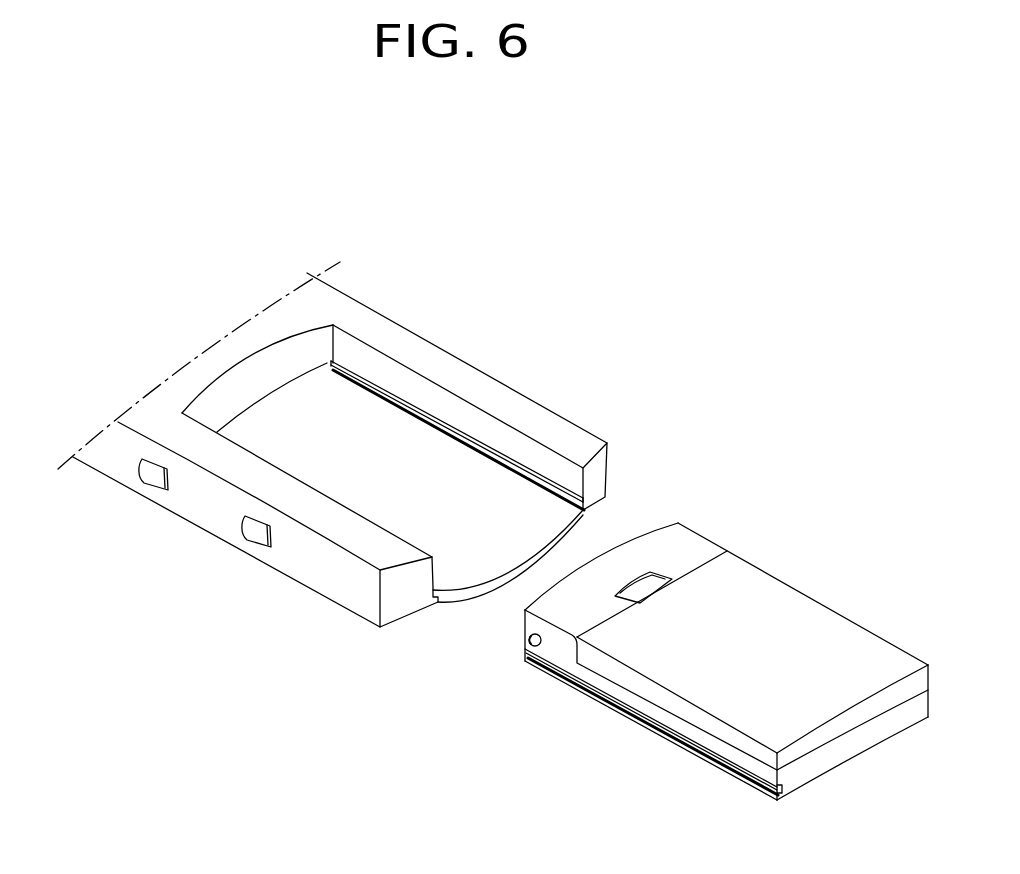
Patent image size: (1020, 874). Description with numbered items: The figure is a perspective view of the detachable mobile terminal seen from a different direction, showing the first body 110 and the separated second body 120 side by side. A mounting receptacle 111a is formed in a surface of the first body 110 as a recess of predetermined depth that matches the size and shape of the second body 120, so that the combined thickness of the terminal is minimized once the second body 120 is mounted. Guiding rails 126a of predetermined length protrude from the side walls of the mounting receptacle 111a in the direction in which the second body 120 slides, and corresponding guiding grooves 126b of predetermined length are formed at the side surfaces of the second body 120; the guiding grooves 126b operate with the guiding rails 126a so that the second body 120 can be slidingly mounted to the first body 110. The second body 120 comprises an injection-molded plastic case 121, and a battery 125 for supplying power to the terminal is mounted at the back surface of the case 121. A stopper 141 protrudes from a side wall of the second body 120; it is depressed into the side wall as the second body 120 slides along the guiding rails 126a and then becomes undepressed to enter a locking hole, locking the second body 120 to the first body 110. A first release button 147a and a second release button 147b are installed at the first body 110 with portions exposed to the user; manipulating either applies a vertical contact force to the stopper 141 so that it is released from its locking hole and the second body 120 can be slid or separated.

The first body 110 is at (332, 482).
The mounting receptacle 111a is at (398, 515).
The second body 120 is at (685, 645).
The case 121 is at (687, 548).
The battery 125 is at (820, 623).
The guiding rails 126a is at (520, 467).
The guiding grooves 126b is at (563, 672).
The stopper 141 is at (528, 646).
The first release button 147a is at (253, 535).
The second release button 147b is at (151, 477).